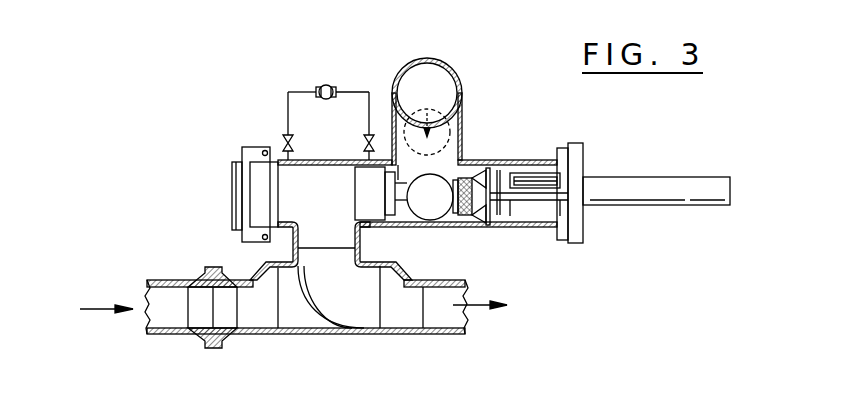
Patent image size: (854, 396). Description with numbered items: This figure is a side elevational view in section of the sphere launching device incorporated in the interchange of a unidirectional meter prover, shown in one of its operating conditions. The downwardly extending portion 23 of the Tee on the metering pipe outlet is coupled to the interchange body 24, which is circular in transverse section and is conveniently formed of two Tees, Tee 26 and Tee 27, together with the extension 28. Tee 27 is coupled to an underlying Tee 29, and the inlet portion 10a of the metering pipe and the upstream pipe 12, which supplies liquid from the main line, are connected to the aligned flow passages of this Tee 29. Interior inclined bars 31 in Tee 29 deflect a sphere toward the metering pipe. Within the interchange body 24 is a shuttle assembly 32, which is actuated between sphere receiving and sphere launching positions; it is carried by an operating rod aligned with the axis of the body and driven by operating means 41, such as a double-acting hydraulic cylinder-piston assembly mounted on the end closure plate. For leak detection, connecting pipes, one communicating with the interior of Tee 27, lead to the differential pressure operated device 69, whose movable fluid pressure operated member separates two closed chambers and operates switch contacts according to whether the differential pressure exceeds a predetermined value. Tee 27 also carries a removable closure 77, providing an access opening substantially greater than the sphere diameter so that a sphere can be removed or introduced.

The inlet portion 10a is at (456, 336).
The upstream pipe 12 is at (155, 336).
The downwardly extending portion 23 is at (463, 138).
The interchange body 24 is at (515, 160).
The Tee 26 is at (445, 222).
The Tee 27 is at (312, 162).
The extension 28 is at (540, 228).
The underlying Tee 29 is at (366, 336).
The interior inclined bars 31 is at (318, 333).
The shuttle assembly 32 is at (501, 214).
The operating means 41 is at (662, 178).
The differential pressure operated device 69 is at (337, 89).
The removable closure 77 is at (232, 189).